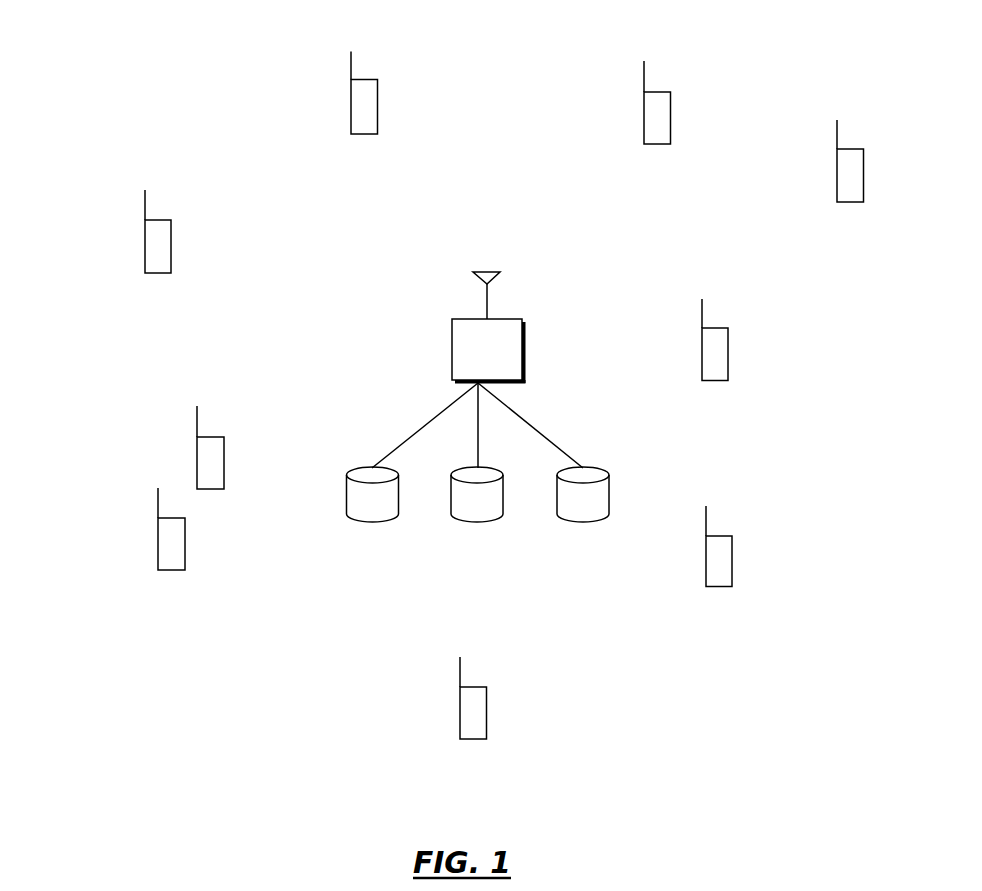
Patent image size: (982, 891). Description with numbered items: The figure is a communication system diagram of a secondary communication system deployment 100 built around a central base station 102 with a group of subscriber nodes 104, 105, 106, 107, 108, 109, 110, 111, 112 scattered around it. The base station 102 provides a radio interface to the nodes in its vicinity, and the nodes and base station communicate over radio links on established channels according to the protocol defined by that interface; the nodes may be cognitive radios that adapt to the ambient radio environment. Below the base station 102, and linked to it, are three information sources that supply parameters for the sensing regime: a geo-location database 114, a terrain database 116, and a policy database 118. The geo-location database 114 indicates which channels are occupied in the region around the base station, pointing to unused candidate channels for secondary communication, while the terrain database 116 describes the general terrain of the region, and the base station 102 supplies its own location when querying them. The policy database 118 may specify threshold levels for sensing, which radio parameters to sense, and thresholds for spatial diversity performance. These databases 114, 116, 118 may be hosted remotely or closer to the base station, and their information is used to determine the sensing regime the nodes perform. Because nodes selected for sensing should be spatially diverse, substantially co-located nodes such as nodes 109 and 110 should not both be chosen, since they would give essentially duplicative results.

The secondary communication system deployment 100 is at (80, 50).
The base station 102 is at (452, 355).
The subscriber node 104 is at (644, 108).
The subscriber node 105 is at (837, 179).
The subscriber node 106 is at (728, 354).
The subscriber node 107 is at (732, 547).
The subscriber node 108 is at (487, 718).
The subscriber node 109 is at (158, 547).
The subscriber node 110 is at (197, 459).
The subscriber node 111 is at (145, 257).
The subscriber node 112 is at (351, 128).
The geo-location database 114 is at (373, 521).
The terrain database 116 is at (478, 521).
The policy database 118 is at (580, 521).